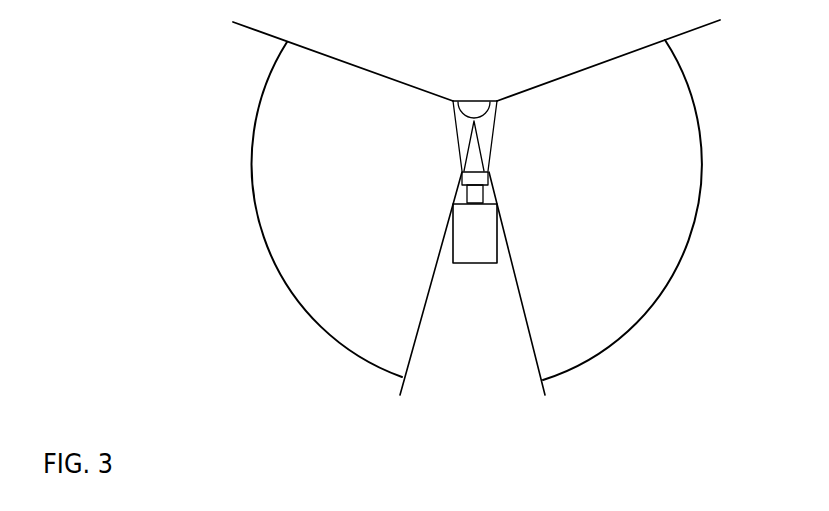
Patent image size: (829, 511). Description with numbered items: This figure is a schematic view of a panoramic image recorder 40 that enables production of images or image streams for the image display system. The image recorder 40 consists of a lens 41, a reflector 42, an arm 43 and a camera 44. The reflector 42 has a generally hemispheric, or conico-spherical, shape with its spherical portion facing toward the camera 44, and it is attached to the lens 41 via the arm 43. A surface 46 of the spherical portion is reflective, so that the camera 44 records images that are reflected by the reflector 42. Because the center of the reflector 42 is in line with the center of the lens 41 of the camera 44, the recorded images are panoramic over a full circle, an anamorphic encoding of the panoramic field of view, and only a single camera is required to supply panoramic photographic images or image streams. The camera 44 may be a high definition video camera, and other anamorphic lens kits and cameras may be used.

The image recorder 40 is at (477, 273).
The lens 41 is at (483, 182).
The reflector 42 is at (483, 100).
The arm 43 is at (475, 147).
The camera 44 is at (488, 255).
The surface 46 is at (461, 122).